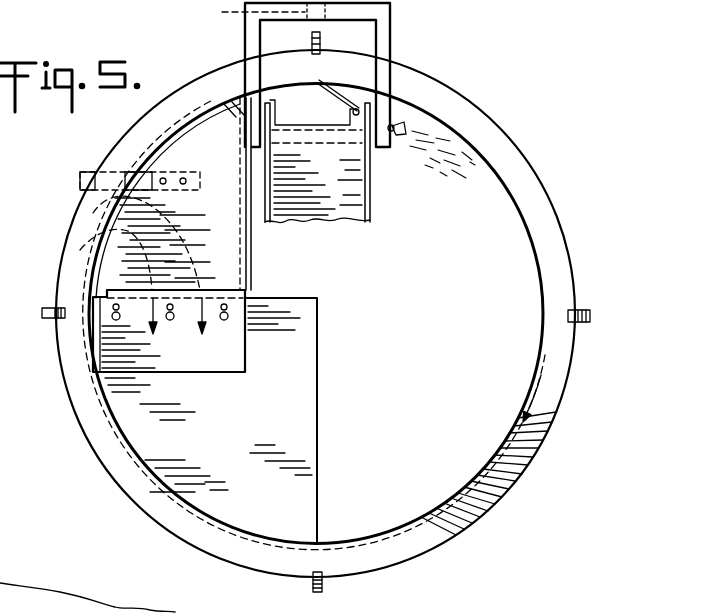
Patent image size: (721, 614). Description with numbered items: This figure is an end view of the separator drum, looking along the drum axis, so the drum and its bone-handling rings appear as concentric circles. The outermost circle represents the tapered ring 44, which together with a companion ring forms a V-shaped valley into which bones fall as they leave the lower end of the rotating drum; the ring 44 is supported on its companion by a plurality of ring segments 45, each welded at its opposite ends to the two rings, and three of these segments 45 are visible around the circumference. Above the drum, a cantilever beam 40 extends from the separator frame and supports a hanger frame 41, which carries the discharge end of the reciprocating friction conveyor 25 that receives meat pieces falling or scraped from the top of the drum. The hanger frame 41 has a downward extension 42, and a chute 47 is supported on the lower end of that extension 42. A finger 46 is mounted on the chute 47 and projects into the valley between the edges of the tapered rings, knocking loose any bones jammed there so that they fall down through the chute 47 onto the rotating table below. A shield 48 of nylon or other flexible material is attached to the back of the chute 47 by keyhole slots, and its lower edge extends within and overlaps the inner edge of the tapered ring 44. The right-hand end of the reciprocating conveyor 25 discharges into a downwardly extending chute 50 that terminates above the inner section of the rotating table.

The reciprocating friction conveyor 25 is at (300, 125).
The cantilever beam 40 is at (250, 13).
The hanger frame 41 is at (390, 48).
The downward extension 42 is at (252, 250).
The tapered ring 44 is at (105, 451).
The ring segments 45 is at (48, 310).
The finger 46 is at (90, 172).
The chute 47 is at (120, 345).
The shield 48 is at (250, 440).
The downwardly extending chute 50 is at (360, 200).